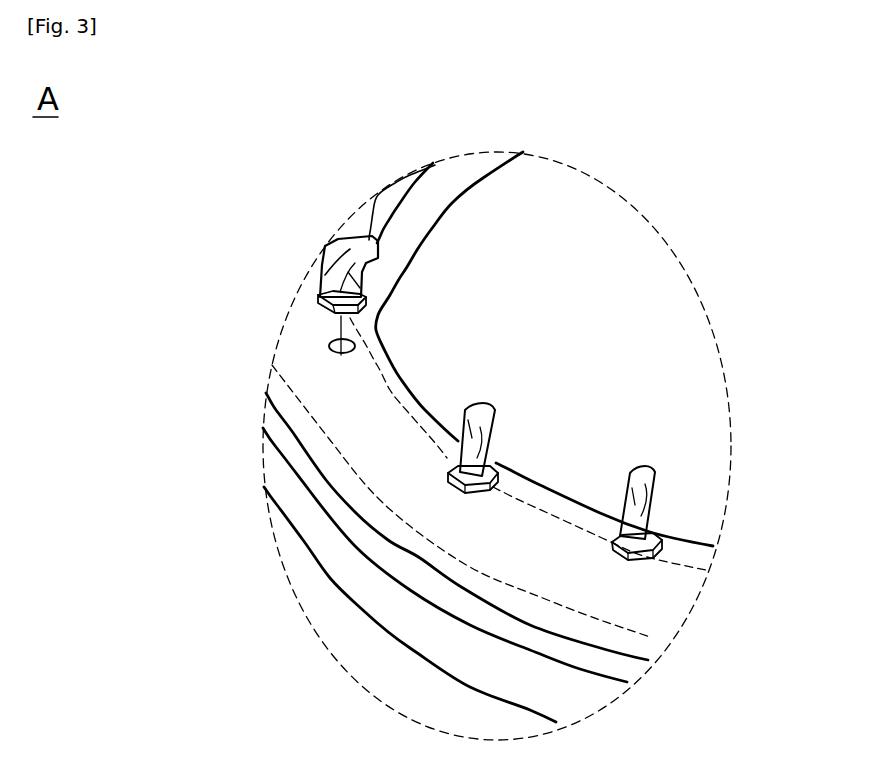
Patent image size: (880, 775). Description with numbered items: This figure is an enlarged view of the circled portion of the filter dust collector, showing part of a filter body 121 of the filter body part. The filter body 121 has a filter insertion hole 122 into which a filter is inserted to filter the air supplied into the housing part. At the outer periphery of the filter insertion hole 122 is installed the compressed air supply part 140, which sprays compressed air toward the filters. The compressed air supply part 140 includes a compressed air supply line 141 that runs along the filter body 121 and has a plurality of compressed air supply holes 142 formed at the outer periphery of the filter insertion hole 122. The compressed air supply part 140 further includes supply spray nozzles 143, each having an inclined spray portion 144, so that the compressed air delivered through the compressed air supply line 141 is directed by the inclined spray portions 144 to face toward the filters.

The filter body 121 is at (337, 548).
The filter insertion hole 122 is at (593, 248).
The compressed air supply part 140 is at (564, 339).
The compressed air supply line 141 is at (443, 580).
The compressed air supply hole 142 is at (338, 337).
The supply spray nozzle 143 is at (464, 408).
The inclined spray portion 144 is at (498, 443).